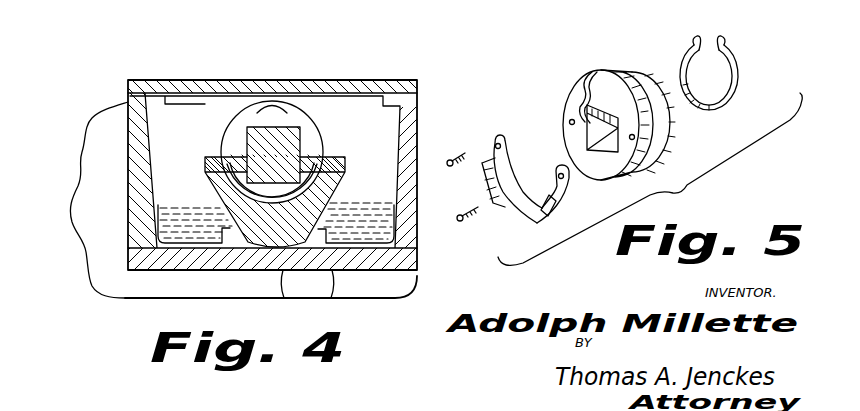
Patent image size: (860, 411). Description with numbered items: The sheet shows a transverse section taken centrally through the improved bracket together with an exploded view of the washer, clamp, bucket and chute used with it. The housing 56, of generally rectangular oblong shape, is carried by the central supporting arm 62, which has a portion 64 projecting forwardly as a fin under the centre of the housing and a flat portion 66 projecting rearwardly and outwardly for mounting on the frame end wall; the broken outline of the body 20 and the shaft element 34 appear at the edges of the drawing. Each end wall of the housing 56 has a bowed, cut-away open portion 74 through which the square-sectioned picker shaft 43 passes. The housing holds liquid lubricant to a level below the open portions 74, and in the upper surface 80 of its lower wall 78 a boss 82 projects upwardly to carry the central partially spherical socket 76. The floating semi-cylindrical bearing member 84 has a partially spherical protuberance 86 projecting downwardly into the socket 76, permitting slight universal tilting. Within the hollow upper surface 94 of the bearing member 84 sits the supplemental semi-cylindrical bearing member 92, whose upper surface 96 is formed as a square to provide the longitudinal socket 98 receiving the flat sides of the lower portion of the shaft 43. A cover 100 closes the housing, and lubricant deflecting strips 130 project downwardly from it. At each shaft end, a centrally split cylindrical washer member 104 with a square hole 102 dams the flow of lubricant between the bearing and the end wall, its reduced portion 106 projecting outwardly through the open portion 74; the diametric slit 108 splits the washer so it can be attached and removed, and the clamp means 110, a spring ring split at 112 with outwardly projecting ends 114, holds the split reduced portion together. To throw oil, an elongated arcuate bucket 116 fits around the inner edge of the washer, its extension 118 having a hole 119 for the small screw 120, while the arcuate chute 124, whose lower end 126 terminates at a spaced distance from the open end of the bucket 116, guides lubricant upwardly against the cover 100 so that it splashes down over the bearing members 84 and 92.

In FIG. 4, the base 20 is at (269, 297).
In FIG. 5, the shaft 34 is at (627, 6).
In FIG. 4, the picker shaft 43 is at (290, 146).
In FIG. 4, the housing 56 is at (323, 297).
In FIG. 4, the central supporting arm 62 is at (105, 122).
In FIG. 4, the portion projecting forwardly 64 is at (202, 294).
In FIG. 4, the flat portion 66 is at (108, 288).
In FIG. 4, the open portion 74 is at (333, 82).
In FIG. 4, the partially spherical socket 76 is at (262, 268).
In FIG. 4, the lower wall 78 is at (418, 276).
In FIG. 4, the upper surface 80 is at (388, 250).
In FIG. 4, the boss 82 is at (335, 203).
In FIG. 4, the floating semi-cylindrical bearing member 84 is at (210, 182).
In FIG. 4, the partially spherical protuberance 86 is at (205, 269).
In FIG. 4, the supplemental semi-cylindrical bearing member 92 is at (232, 157).
In FIG. 4, the hollow upper surface 94 is at (342, 164).
In FIG. 4, the upper surface 96 is at (330, 150).
In FIG. 4, the longitudinal socket 98 is at (206, 162).
In FIG. 4, the cover 100 is at (205, 68).
In FIG. 4, the hole 102 is at (262, 115).
In FIG. 5, the hole 102 is at (577, 100).
In FIG. 4, the washer member 104 is at (315, 130).
In FIG. 5, the washer member 104 is at (613, 68).
In FIG. 5, the reduced portion 106 is at (657, 70).
In FIG. 5, the diametric slit 108 is at (590, 73).
In FIG. 5, the clamp means 110 is at (735, 82).
In FIG. 5, the split 112 is at (720, 40).
In FIG. 5, the outwardly projecting ends 114 is at (697, 40).
In FIG. 5, the bucket 116 is at (528, 222).
In FIG. 5, the extension 118 is at (509, 162).
In FIG. 5, the hole 119 is at (498, 139).
In FIG. 5, the screw 120 is at (472, 148).
In FIG. 5, the arcuate chute 124 is at (486, 183).
In FIG. 5, the lower end 126 is at (505, 213).
In FIG. 4, the lubricant deflecting strips 130 is at (264, 92).